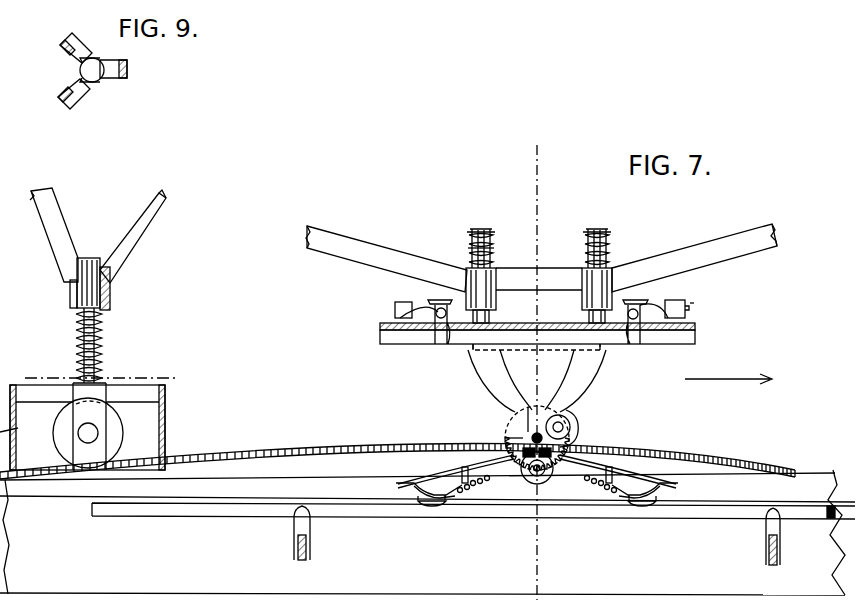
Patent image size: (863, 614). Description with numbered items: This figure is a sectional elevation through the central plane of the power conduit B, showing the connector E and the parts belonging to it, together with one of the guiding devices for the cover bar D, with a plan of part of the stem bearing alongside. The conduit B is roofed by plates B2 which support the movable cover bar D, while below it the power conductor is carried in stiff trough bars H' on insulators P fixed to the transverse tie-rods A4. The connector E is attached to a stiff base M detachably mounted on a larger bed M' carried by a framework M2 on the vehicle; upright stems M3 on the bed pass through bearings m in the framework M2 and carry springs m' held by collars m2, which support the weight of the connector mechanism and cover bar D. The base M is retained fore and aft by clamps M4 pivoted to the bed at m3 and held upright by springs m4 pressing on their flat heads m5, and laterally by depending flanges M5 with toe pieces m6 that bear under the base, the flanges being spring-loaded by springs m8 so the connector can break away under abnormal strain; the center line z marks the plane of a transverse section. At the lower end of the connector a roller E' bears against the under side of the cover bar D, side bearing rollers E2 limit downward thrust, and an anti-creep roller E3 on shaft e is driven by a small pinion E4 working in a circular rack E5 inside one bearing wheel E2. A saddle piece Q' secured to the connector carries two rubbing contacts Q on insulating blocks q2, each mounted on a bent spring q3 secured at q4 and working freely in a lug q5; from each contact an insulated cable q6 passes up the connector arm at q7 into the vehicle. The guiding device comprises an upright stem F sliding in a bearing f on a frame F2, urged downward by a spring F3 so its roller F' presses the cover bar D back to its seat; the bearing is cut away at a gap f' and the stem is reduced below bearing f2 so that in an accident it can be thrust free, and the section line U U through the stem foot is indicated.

In FIG. 9, the gap in bearing f' is at (70, 71).
In FIG. 7, the gap in bearing f' is at (56, 294).
In FIG. 9, the bearing f is at (115, 80).
In FIG. 7, the bearing f is at (114, 288).
In FIG. 7, the frame F2 is at (52, 216).
In FIG. 7, the upright stem F is at (72, 296).
In FIG. 7, the spring F3 is at (100, 322).
In FIG. 7, the bearing f2 is at (80, 346).
In FIG. 7, the section line U- U is at (92, 379).
In FIG. 7, the roller F' is at (82, 426).
In FIG. 7, the section line z is at (535, 363).
In FIG. 7, the base M is at (541, 295).
In FIG. 7, the upright stem M3 is at (484, 228).
In FIG. 7, the pin or collar m2 is at (492, 232).
In FIG. 7, the spring m' is at (496, 246).
In FIG. 7, the bearing m is at (539, 295).
In FIG. 7, the framework M2 is at (539, 279).
In FIG. 7, the bed M' is at (537, 315).
In FIG. 7, the flange M5 is at (690, 337).
In FIG. 7, the toe piece m6 is at (538, 343).
In FIG. 7, the spring m4 is at (395, 312).
In FIG. 7, the pivot m3 is at (436, 310).
In FIG. 7, the flat head m5 is at (438, 308).
In FIG. 7, the spring m8 is at (680, 304).
In FIG. 7, the clamp M4 is at (440, 340).
In FIG. 7, the connector E is at (537, 381).
In FIG. 7, the pinion E4 is at (530, 428).
In FIG. 7, the bearing roller E2 is at (518, 416).
In FIG. 7, the roller E3 is at (570, 420).
In FIG. 7, the shaft e is at (566, 430).
In FIG. 7, the circular rack E5 is at (504, 436).
In FIG. 7, the roller E' is at (551, 473).
In FIG. 7, the cover bar D is at (664, 455).
In FIG. 7, the bar H' is at (427, 488).
In FIG. 7, the roof plate B2 is at (473, 496).
In FIG. 7, the power conduit B is at (422, 532).
In FIG. 7, the insulator P is at (300, 522).
In FIG. 7, the tie-rod A4 is at (304, 556).
In FIG. 7, the saddle piece Q' is at (537, 447).
In FIG. 7, the lug q5 is at (464, 467).
In FIG. 7, the securing point q4 is at (400, 485).
In FIG. 7, the rubbing contact Q is at (539, 522).
In FIG. 7, the bent spring q3 is at (412, 484).
In FIG. 7, the insulating block q2 is at (445, 500).
In FIG. 7, the cable passage on connector arm q7 is at (524, 460).
In FIG. 7, the insulated cable q6 is at (490, 482).